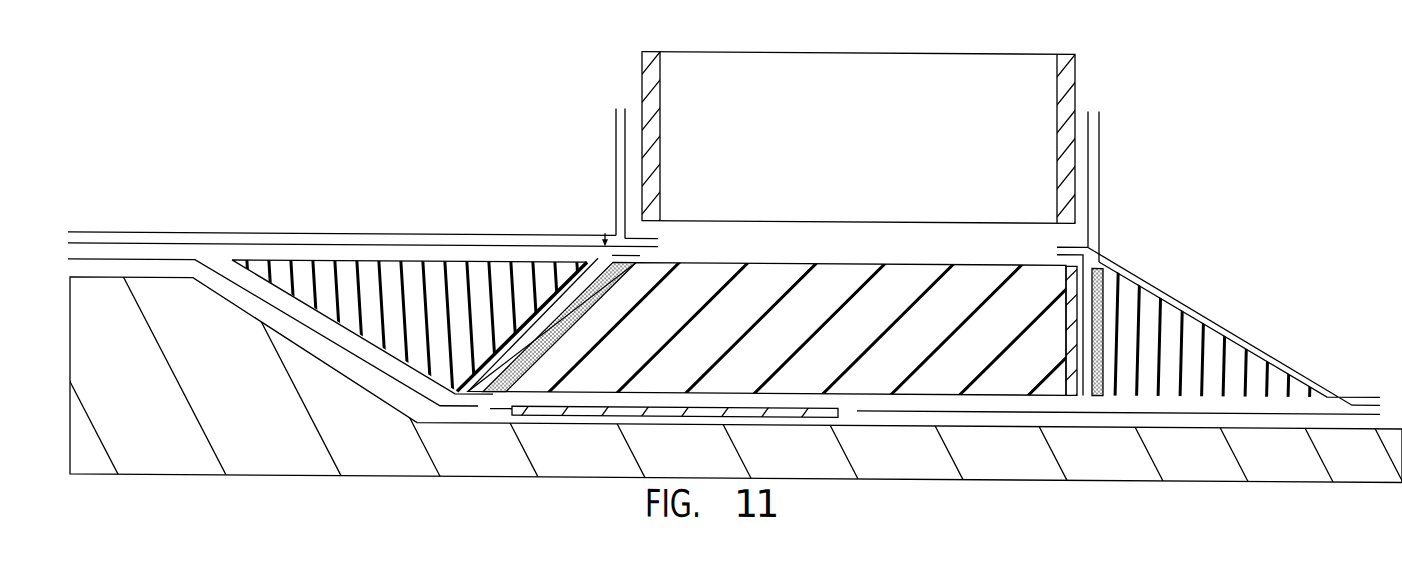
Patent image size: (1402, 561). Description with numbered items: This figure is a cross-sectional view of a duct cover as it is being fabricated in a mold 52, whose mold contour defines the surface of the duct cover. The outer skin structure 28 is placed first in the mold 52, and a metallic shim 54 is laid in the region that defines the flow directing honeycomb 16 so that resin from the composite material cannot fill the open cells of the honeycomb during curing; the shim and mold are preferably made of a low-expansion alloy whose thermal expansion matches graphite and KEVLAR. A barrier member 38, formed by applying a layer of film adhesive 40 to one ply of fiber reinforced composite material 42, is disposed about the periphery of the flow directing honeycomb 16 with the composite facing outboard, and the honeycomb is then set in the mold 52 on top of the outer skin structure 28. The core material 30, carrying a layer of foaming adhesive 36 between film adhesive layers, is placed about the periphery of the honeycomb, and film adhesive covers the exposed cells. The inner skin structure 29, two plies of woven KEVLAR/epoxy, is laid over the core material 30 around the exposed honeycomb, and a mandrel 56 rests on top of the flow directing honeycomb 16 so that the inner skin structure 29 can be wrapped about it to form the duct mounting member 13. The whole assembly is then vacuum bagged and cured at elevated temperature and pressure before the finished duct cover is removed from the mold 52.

The duct mounting member 13 is at (615, 130).
The flow directing honeycomb 16 is at (793, 384).
The outer skin structure 28 is at (384, 376).
The inner skin structure 29 is at (363, 236).
The core material 30 is at (1190, 323).
The foaming adhesive 36 is at (530, 389).
The barrier member 38 is at (605, 234).
The film adhesive 40 is at (545, 279).
The fiber reinforced composite material 42 is at (474, 401).
The mold 52 is at (264, 462).
The metallic shim 54 is at (678, 415).
The mandrel 56 is at (1076, 66).